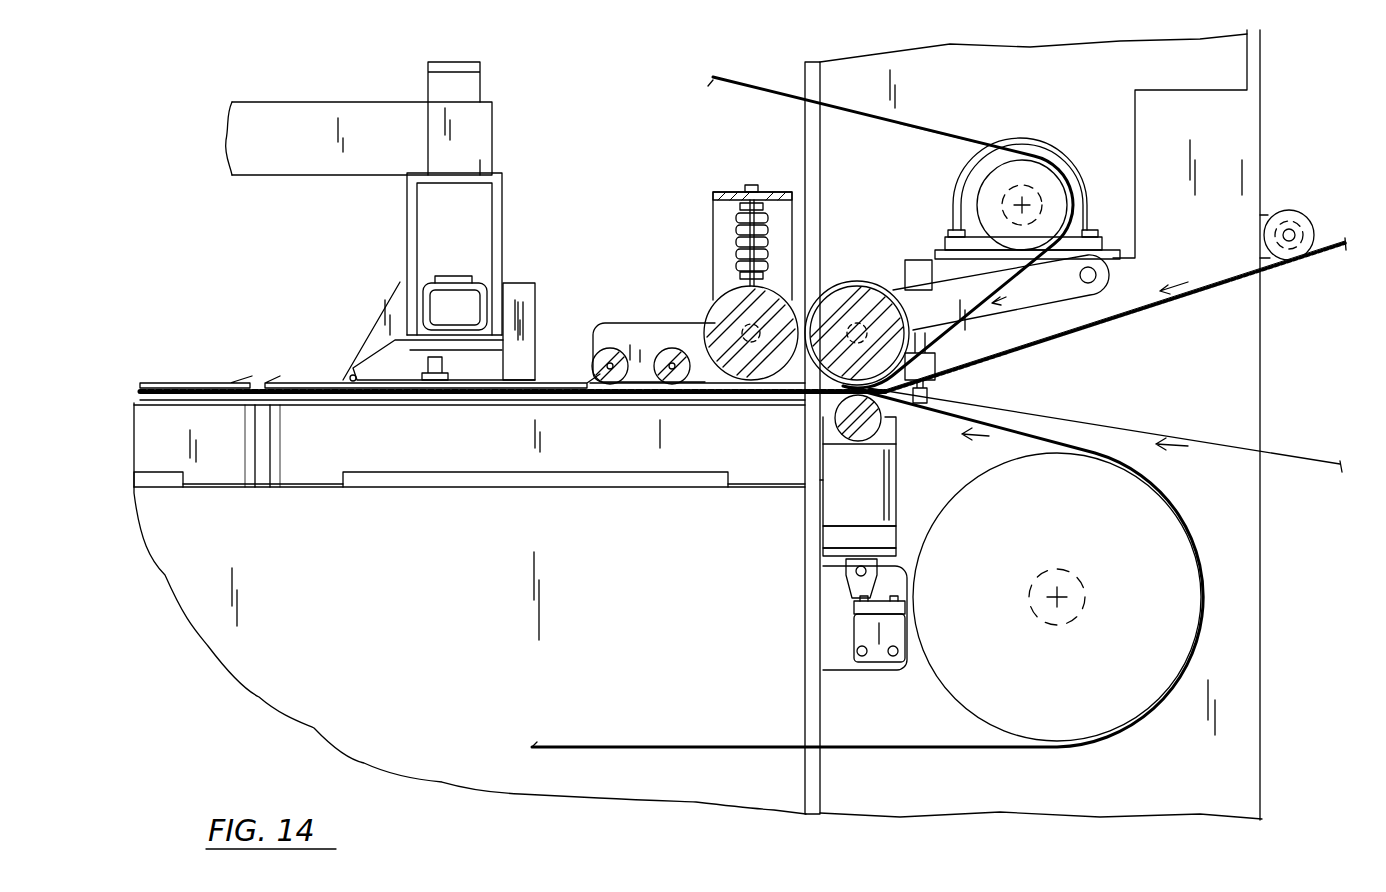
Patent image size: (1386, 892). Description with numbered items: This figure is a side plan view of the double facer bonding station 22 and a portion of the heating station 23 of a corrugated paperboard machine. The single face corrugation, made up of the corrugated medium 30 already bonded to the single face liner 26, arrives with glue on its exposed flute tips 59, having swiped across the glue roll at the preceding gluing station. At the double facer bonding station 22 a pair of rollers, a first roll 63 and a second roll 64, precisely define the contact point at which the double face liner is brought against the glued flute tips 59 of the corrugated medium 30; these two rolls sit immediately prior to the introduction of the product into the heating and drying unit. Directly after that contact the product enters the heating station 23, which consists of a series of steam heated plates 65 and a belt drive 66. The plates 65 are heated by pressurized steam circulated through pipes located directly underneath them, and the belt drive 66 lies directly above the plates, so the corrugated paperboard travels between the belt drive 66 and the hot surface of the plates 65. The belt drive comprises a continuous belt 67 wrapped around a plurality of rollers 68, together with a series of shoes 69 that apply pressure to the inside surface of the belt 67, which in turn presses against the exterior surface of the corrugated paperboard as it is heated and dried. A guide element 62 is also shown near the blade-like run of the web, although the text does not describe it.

The double facer bonding station 22 is at (1216, 70).
The heating station 23 is at (525, 244).
The single face liner 26 is at (1310, 259).
The corrugated medium 30 is at (1277, 263).
The flute tips 59 is at (1012, 345).
The guide plate 62 is at (1293, 453).
The first roll 63 is at (848, 278).
The second roll 64 is at (735, 292).
The steam heated plates 65 is at (318, 402).
The belt drive 66 is at (743, 77).
The continuous belt 67 is at (1000, 98).
The rollers 68 is at (977, 180).
The shoes 69 is at (277, 383).